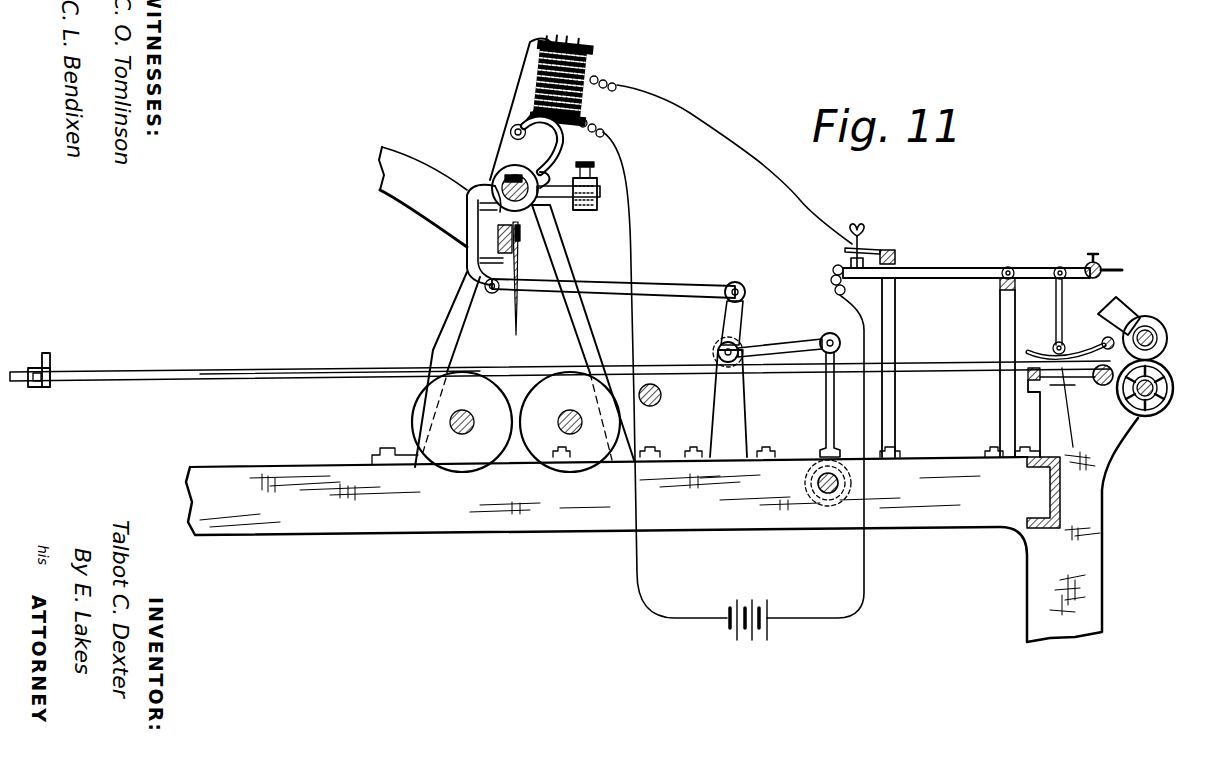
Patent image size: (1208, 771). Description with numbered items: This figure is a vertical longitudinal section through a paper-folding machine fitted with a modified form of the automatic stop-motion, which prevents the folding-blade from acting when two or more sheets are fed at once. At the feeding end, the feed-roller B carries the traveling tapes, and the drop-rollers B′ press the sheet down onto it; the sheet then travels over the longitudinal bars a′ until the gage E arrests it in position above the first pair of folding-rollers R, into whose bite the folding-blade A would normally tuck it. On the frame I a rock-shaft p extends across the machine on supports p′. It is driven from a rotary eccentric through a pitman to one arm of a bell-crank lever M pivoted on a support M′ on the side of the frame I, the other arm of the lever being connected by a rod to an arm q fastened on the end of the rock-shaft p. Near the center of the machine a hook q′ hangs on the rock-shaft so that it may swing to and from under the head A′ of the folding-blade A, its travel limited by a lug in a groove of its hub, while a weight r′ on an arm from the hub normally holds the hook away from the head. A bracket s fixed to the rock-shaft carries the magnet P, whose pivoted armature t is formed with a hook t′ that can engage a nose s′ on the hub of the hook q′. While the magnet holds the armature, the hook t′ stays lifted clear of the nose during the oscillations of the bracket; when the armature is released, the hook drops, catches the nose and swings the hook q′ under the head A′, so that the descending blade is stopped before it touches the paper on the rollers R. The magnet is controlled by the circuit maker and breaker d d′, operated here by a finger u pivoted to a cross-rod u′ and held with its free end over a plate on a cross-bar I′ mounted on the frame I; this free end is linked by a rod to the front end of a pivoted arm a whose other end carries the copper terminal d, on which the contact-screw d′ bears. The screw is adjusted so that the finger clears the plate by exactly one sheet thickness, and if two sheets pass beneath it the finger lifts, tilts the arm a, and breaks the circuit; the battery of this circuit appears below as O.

The frame I is at (662, 530).
The gage E is at (52, 360).
The longitudinal bars a′ is at (340, 360).
The folding-rollers R is at (536, 422).
The supports p′ is at (448, 312).
The hook q′ is at (462, 258).
The arm q is at (492, 292).
The weight r′ is at (504, 177).
The rock-shaft p is at (470, 210).
The head of the folding-blade A′ is at (500, 239).
The folding-blade A is at (514, 312).
The bracket s is at (506, 112).
The nose s′ is at (568, 206).
The magnet P is at (580, 102).
The armature t is at (549, 145).
The hook of the armature t′ is at (556, 170).
The battery circuit O is at (733, 362).
The support M′ is at (712, 417).
The bell-crank lever M is at (800, 345).
The terminal d is at (836, 265).
The contact-screw d′ is at (865, 246).
The pivoted arm a is at (962, 278).
The finger u is at (1040, 356).
The cross-rod u′ is at (1100, 342).
The cross-bar I′ is at (1040, 408).
The drop-rollers B′ is at (1152, 316).
The feed-roller B is at (1165, 374).